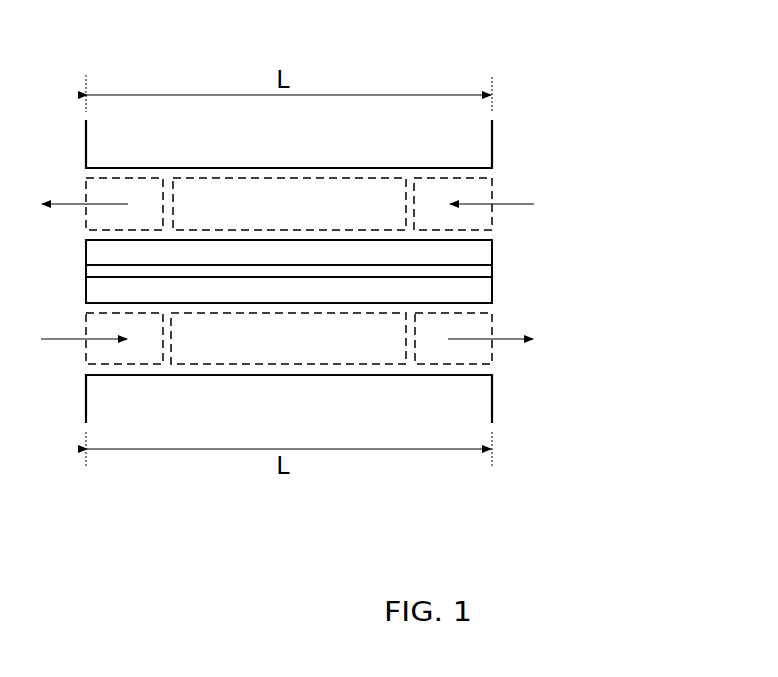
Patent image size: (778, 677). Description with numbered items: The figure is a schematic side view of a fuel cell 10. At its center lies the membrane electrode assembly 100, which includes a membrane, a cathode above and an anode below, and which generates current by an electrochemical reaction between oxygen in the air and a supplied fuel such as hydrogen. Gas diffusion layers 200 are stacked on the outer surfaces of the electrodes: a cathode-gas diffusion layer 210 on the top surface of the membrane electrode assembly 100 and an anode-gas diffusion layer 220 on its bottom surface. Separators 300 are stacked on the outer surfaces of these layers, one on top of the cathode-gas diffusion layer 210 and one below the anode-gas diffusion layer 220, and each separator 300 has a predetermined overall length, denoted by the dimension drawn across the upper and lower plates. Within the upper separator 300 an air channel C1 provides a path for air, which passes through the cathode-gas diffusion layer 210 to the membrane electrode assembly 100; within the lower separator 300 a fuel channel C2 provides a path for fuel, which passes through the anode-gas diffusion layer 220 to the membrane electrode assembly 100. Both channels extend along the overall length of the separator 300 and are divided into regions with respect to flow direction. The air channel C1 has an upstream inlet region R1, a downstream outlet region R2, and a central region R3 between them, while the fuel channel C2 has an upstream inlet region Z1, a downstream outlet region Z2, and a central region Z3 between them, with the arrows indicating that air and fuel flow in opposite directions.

The fuel cell 10 is at (412, 27).
The membrane electrode assembly 100 is at (485, 271).
The gas diffusion layers 200 is at (698, 188).
The cathode-gas diffusion layer 210 is at (483, 253).
The anode-gas diffusion layer 220 is at (483, 297).
The separator 300 is at (483, 143).
The inlet region R1 is at (435, 178).
The outlet region R2 is at (140, 178).
The central region R3 is at (347, 178).
The air channel C1 is at (283, 203).
The fuel channel C2 is at (292, 340).
The inlet region Z1 is at (140, 366).
The outlet region Z2 is at (435, 366).
The central region Z3 is at (347, 366).